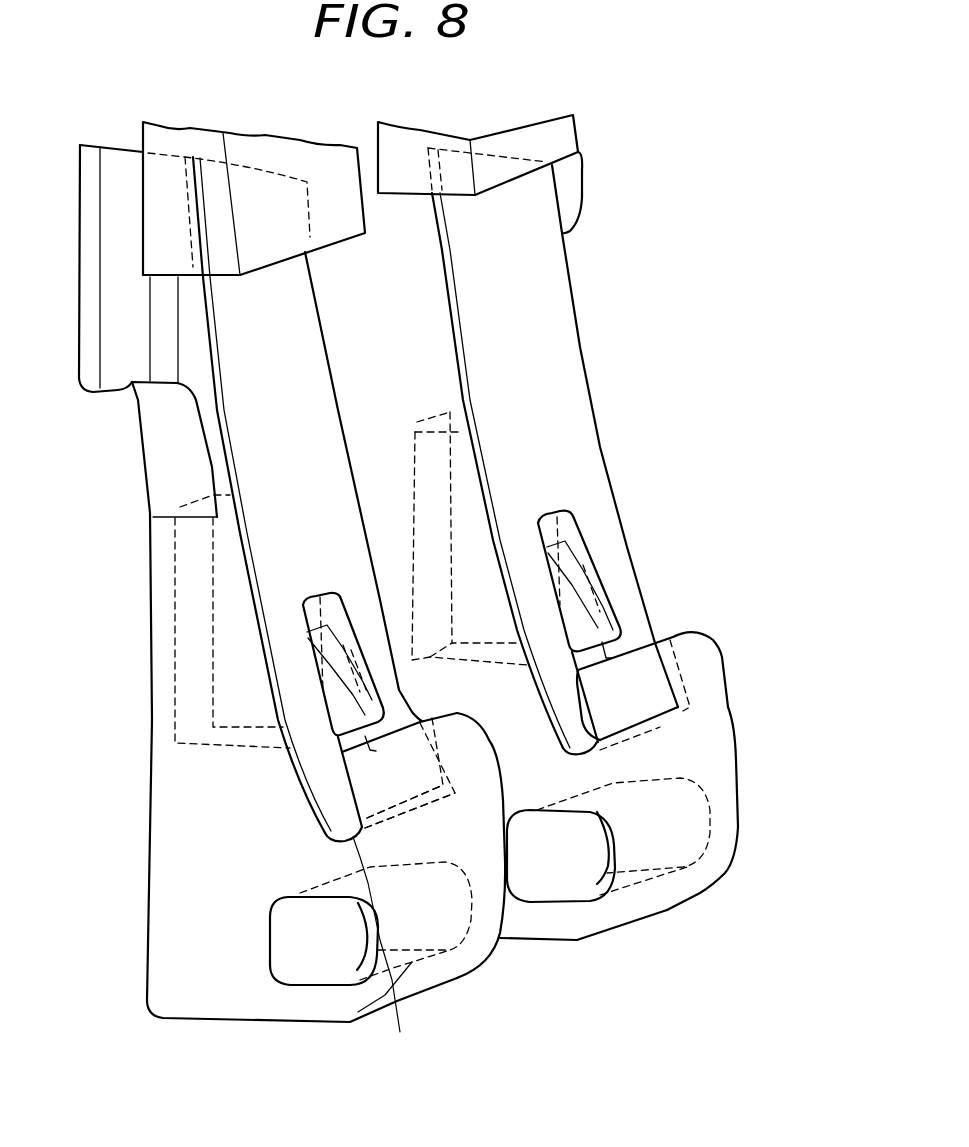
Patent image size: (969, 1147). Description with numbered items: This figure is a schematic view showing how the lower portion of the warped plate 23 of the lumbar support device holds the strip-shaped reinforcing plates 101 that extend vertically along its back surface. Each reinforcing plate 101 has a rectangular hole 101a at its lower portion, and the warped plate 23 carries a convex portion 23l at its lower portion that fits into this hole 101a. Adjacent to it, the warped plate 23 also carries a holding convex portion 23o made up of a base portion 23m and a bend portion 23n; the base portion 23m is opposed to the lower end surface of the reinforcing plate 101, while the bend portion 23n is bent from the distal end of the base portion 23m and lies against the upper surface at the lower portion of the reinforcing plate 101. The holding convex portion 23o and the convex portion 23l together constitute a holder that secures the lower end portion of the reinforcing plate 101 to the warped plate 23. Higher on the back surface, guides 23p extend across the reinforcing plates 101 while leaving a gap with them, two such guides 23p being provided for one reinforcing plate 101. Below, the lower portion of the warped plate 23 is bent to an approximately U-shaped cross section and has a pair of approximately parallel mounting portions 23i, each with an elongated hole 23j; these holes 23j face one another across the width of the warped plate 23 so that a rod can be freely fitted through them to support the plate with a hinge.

The warped plate 23 is at (148, 573).
The guide 23p is at (157, 140).
The reinforcing plate 101 is at (243, 448).
The rectangular hole 101a is at (323, 705).
The convex portion 23l is at (327, 657).
The base portion 23m is at (367, 782).
The bend portion 23n is at (363, 742).
The holding convex portion 23o is at (483, 1000).
The mounting portion 23i is at (208, 973).
The hole 23j is at (315, 985).